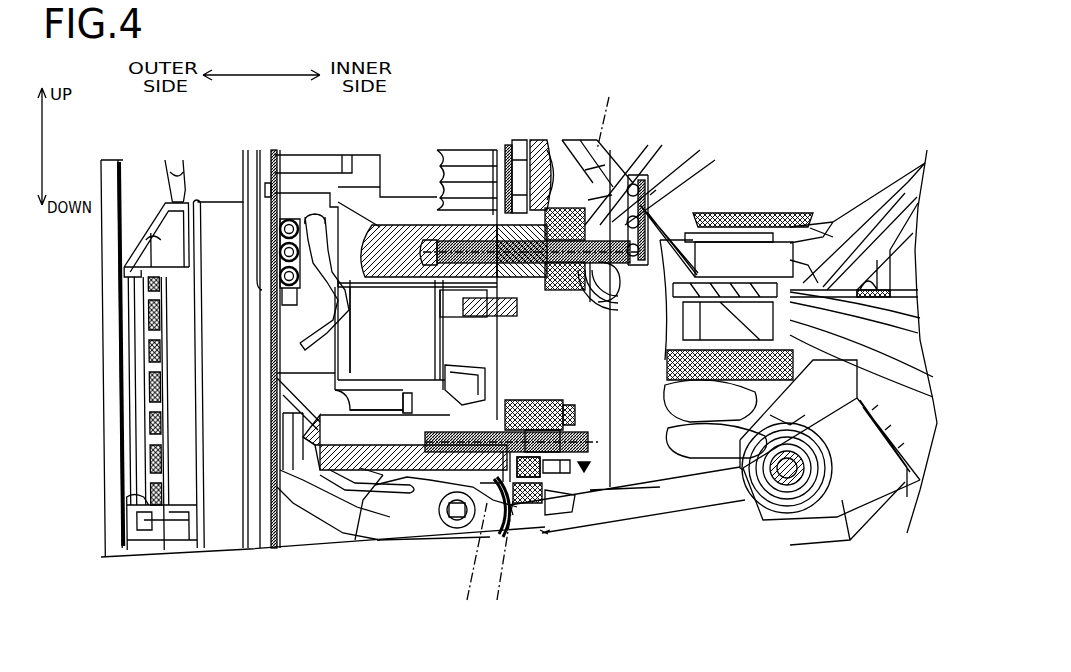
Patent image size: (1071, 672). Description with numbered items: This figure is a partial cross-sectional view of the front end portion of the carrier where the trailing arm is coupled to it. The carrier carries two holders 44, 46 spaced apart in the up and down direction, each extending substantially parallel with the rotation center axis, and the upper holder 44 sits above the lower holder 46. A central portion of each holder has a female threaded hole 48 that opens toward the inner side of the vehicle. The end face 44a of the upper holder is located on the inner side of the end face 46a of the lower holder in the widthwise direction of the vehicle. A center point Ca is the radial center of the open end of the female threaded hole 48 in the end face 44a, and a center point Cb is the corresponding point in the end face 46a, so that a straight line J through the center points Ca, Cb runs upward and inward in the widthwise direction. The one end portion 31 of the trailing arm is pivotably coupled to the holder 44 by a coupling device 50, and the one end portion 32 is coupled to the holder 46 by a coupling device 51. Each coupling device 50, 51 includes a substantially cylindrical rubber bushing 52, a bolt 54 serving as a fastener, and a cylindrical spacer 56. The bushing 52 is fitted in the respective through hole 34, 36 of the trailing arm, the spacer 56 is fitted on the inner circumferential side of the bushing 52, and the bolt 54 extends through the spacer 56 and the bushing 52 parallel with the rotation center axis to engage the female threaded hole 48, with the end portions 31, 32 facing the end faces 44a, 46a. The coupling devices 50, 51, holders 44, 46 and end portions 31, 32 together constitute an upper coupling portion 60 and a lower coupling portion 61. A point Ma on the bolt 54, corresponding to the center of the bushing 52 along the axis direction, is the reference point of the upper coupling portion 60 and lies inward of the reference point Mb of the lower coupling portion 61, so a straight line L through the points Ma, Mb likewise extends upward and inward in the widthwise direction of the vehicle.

The one end portion 31 is at (605, 290).
The one end portion 32 is at (512, 400).
The through hole 34 is at (621, 295).
The through hole 36 is at (548, 403).
The holder 44 is at (383, 250).
The end face 44a is at (577, 185).
The holder 46 is at (342, 540).
The end face 46a is at (547, 500).
The female threaded hole 48 is at (423, 250).
The coupling device 50 is at (705, 213).
The coupling device 51 is at (635, 530).
The rubber bushing 52 is at (648, 183).
The bolt 54 is at (515, 208).
The spacer 56 is at (653, 217).
The coupling portion 60 is at (640, 155).
The coupling portion 61 is at (530, 510).
The straight line L is at (606, 276).
The straight line J is at (484, 563).
The point Ma is at (652, 193).
The reference point Mb is at (543, 532).
The center point Ca is at (440, 312).
The center point Cb is at (443, 502).